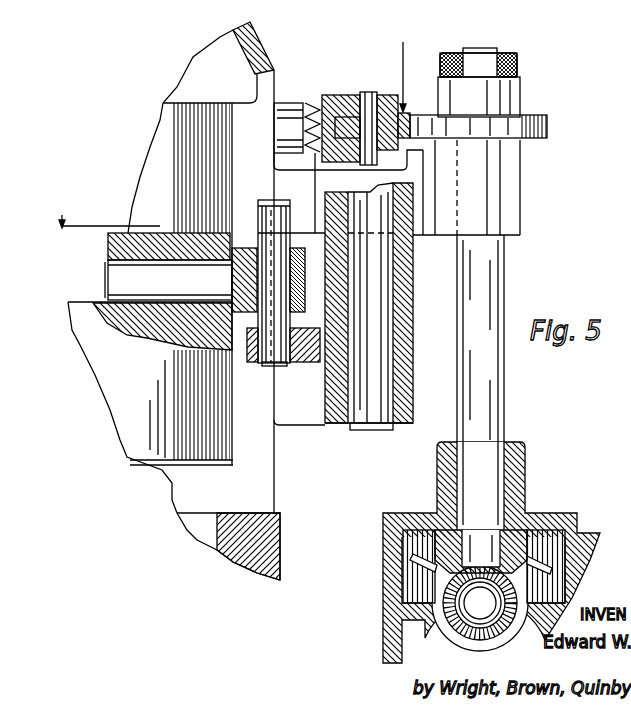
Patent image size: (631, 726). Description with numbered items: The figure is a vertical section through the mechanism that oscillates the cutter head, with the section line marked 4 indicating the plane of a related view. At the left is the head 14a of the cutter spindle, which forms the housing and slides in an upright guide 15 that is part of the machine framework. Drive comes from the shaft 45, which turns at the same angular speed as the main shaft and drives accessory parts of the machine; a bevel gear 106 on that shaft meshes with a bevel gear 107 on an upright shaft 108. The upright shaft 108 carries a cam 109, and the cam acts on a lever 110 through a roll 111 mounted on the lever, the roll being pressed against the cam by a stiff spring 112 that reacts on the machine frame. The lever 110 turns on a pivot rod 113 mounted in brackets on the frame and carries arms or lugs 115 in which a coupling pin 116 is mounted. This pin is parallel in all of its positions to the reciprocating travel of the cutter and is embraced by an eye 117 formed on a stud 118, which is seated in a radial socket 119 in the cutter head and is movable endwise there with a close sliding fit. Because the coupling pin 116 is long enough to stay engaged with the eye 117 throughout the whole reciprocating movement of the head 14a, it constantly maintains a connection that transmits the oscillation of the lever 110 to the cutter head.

The head 14a is at (232, 350).
The upright guide 15 is at (252, 42).
The section line 4- 4 is at (231, 125).
The radial socket 119 is at (115, 231).
The stud 118 is at (147, 266).
The eye 117 is at (245, 247).
The coupling pin 116 is at (270, 212).
The arms or lugs 115 is at (305, 355).
The spring 112 is at (314, 105).
The lever 110 is at (345, 97).
The roll 111 is at (386, 97).
The cam 109 is at (530, 117).
The pivot rod 113 is at (375, 300).
The upright shaft 108 is at (490, 410).
The bevel gear 107 is at (423, 572).
The bevel gear 106 is at (447, 600).
The shaft 45 is at (478, 604).